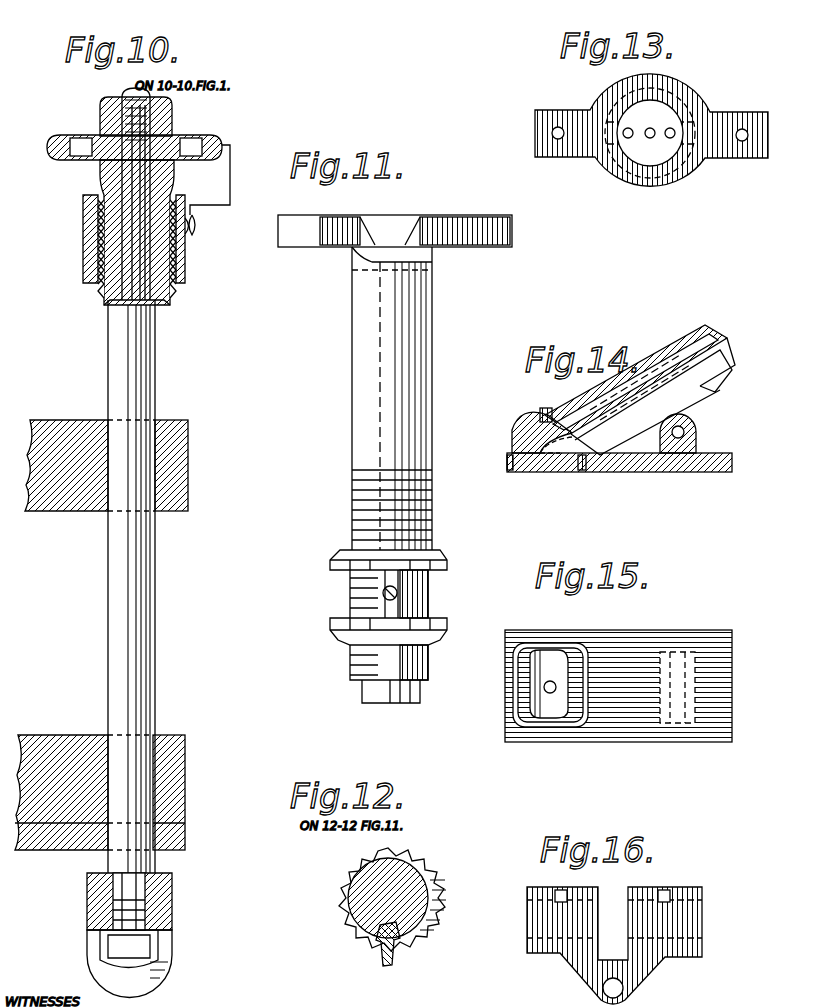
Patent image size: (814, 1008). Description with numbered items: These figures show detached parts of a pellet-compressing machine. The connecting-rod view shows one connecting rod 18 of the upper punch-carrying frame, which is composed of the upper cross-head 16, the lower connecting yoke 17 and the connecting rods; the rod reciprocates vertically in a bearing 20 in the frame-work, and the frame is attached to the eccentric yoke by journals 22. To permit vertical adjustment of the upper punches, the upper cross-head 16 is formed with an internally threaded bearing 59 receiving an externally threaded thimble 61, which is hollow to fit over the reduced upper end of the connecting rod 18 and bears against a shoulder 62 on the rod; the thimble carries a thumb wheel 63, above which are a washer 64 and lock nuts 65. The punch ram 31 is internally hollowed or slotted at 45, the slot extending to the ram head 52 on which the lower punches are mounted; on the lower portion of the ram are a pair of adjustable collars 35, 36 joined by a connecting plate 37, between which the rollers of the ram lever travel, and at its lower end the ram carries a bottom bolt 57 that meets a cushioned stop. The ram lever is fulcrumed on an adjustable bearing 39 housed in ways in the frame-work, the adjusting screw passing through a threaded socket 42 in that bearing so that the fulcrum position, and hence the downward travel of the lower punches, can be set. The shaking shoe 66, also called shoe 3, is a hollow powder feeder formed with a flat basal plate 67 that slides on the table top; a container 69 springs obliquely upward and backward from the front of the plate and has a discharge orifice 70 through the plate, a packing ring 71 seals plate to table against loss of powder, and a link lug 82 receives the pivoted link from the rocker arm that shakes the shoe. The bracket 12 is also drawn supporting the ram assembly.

In FIG. 14, the shaking shoe 3 is at (575, 408).
In FIG. 11, the supporting bracket 12 is at (350, 592).
In FIG. 10, the upper cross-head 16 is at (83, 272).
In FIG. 10, the lower connecting yoke 17 is at (160, 905).
In FIG. 10, the connecting rod 18 is at (108, 610).
In FIG. 10, the bearing 20 is at (190, 490).
In FIG. 10, the journal 22 is at (172, 962).
In FIG. 11, the punch ram 31 is at (415, 360).
In FIG. 13, the punch ram 31 is at (660, 160).
In FIG. 12, the punch ram 31 is at (370, 895).
In FIG. 11, the adjustable collar 35 is at (345, 556).
In FIG. 11, the adjustable collar 36 is at (345, 632).
In FIG. 12, the adjustable collar 36 is at (345, 868).
In FIG. 11, the connecting plate 37 is at (385, 598).
In FIG. 12, the connecting plate 37 is at (381, 962).
In FIG. 16, the adjustable bearing 39 is at (690, 926).
In FIG. 16, the threaded socket 42 is at (623, 988).
In FIG. 11, the slot 45 is at (372, 272).
In FIG. 13, the slot 45 is at (665, 118).
In FIG. 11, the ram head 52 is at (430, 235).
In FIG. 13, the ram head 52 is at (605, 95).
In FIG. 11, the bottom bolt 57 is at (368, 690).
In FIG. 10, the internally threaded bearing 59 is at (98, 250).
In FIG. 10, the externally threaded thimble 61 is at (100, 183).
In FIG. 10, the shoulder 62 is at (110, 308).
In FIG. 10, the thumb wheel 63 is at (230, 130).
In FIG. 10, the washer 64 is at (100, 138).
In FIG. 10, the lock nut 65 is at (100, 104).
In FIG. 14, the shaking shoe 66 is at (512, 437).
In FIG. 15, the shaking shoe 66 is at (513, 666).
In FIG. 14, the basal plate 67 is at (630, 472).
In FIG. 15, the basal plate 67 is at (642, 732).
In FIG. 14, the container 69 is at (640, 390).
In FIG. 14, the discharge orifice 70 is at (555, 472).
In FIG. 15, the discharge orifice 70 is at (550, 668).
In FIG. 14, the packing ring 71 is at (512, 472).
In FIG. 15, the packing ring 71 is at (513, 690).
In FIG. 14, the link lug 82 is at (697, 440).
In FIG. 15, the link lug 82 is at (700, 715).